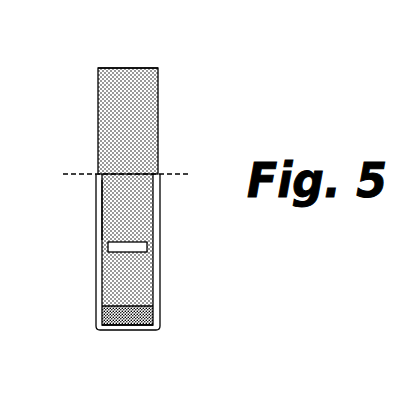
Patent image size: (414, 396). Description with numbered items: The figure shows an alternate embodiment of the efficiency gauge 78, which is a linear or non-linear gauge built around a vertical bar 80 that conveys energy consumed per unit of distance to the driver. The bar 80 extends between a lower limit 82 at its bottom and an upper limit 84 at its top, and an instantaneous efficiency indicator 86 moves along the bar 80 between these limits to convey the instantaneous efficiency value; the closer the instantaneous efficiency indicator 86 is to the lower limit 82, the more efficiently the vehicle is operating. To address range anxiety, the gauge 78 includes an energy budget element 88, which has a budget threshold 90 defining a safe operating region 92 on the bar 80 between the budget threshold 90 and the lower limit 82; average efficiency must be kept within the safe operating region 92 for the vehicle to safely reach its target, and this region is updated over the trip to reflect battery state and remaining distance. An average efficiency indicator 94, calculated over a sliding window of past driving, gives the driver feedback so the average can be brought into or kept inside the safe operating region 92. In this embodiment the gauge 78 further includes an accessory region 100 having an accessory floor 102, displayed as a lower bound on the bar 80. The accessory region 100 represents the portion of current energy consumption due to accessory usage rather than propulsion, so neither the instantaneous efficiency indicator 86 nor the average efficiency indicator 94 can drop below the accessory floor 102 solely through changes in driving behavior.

The efficiency gauge 78 is at (186, 56).
The bar 80 is at (158, 133).
The lower limit 82 is at (128, 326).
The upper limit 84 is at (127, 68).
The instantaneous efficiency indicator 86 is at (128, 253).
The energy budget element 88 is at (95, 297).
The budget threshold 90 is at (163, 175).
The safe operating region 92 is at (132, 281).
The average efficiency indicator 94 is at (108, 227).
The accessory region 100 is at (108, 316).
The accessory floor 102 is at (122, 302).